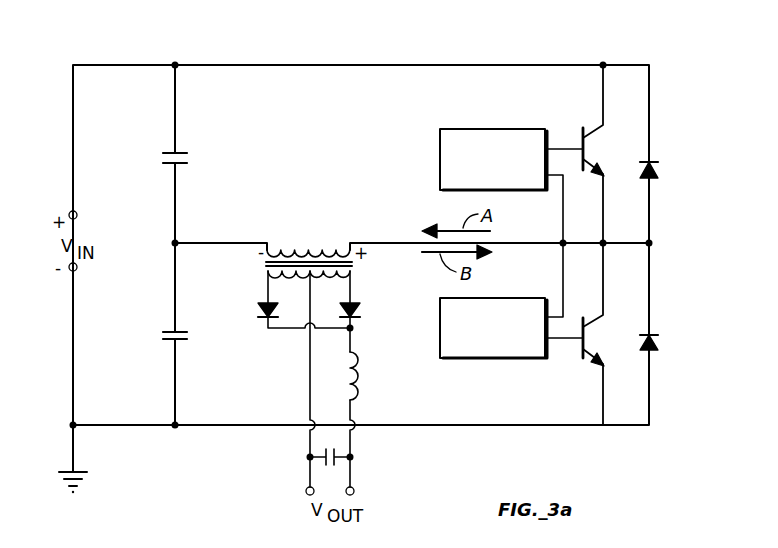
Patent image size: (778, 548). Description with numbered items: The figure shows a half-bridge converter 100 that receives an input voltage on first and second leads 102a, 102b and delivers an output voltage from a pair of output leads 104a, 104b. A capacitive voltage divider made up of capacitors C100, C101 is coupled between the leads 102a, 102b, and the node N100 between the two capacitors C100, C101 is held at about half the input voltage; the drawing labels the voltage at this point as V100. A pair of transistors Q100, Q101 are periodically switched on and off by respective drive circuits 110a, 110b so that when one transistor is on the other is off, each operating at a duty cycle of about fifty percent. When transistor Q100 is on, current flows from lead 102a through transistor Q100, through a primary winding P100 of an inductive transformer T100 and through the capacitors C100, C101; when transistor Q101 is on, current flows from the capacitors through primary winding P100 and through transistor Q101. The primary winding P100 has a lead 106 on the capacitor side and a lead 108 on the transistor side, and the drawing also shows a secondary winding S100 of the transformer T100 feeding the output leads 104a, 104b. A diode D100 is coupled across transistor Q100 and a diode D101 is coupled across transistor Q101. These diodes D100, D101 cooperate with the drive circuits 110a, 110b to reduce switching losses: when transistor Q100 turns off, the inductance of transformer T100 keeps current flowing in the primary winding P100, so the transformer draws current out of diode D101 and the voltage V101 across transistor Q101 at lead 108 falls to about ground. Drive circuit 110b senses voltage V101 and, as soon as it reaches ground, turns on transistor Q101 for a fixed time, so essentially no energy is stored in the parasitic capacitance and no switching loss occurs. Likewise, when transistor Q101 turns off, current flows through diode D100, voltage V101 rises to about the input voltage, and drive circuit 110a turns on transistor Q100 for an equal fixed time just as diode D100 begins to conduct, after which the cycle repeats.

The half-bridge converter 100 is at (387, 44).
The first lead 102a is at (77, 212).
The second lead 102b is at (77, 264).
The output lead 104a is at (309, 480).
The output lead 104b is at (351, 480).
The lead of primary winding 106 is at (235, 243).
The lead of primary winding 108 is at (365, 247).
The drive circuit 110a is at (440, 148).
The drive circuit 110b is at (440, 318).
The capacitor C100 is at (186, 160).
The capacitor C101 is at (186, 341).
The node N100 is at (178, 240).
The midpoint voltage V100 is at (174, 242).
The voltage across transistor Q101 V101 is at (652, 242).
The inductive transformer T100 is at (283, 264).
The primary winding P100 is at (325, 249).
The secondary winding S100 is at (290, 279).
The transistor Q100 is at (583, 131).
The transistor Q101 is at (583, 352).
The diode D100 is at (656, 172).
The diode D101 is at (656, 344).